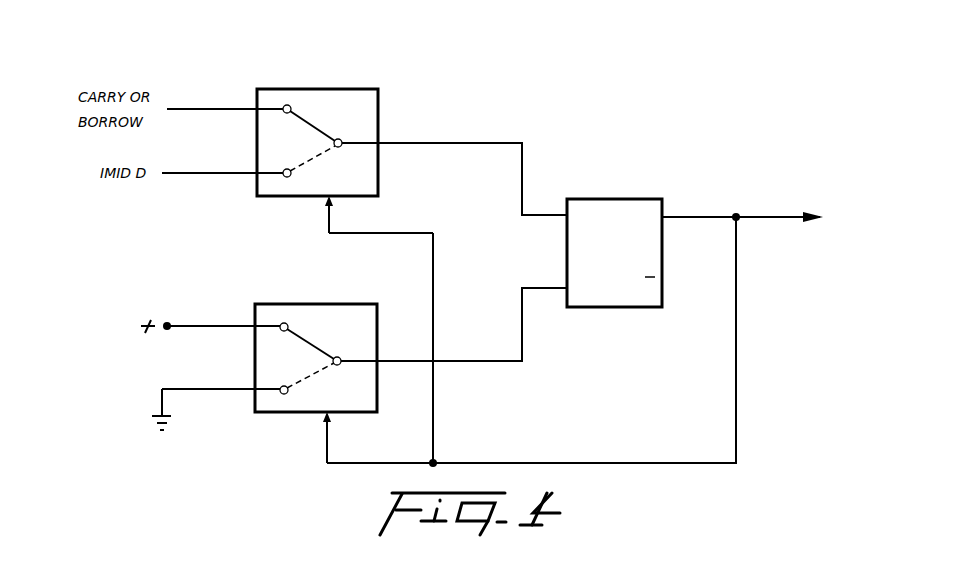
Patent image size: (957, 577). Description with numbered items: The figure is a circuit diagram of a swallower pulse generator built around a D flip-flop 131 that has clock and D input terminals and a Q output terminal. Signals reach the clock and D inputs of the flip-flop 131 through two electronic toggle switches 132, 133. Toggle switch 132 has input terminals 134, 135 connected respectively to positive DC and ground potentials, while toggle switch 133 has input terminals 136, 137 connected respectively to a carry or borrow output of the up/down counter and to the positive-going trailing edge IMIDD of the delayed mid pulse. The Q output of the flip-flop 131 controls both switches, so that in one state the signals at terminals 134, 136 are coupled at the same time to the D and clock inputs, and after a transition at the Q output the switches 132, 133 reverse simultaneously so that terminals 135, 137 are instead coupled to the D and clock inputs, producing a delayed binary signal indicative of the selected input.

The D flip-flop 131 is at (618, 208).
The toggle switch 132 is at (320, 362).
The toggle switch 133 is at (324, 142).
The input terminal 134 is at (282, 322).
The input terminal 135 is at (284, 395).
The input terminal 136 is at (283, 105).
The input terminal 137 is at (285, 177).